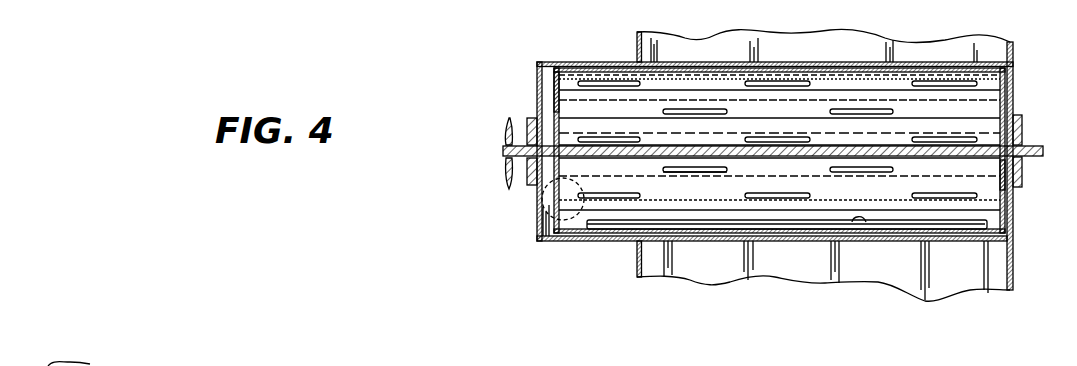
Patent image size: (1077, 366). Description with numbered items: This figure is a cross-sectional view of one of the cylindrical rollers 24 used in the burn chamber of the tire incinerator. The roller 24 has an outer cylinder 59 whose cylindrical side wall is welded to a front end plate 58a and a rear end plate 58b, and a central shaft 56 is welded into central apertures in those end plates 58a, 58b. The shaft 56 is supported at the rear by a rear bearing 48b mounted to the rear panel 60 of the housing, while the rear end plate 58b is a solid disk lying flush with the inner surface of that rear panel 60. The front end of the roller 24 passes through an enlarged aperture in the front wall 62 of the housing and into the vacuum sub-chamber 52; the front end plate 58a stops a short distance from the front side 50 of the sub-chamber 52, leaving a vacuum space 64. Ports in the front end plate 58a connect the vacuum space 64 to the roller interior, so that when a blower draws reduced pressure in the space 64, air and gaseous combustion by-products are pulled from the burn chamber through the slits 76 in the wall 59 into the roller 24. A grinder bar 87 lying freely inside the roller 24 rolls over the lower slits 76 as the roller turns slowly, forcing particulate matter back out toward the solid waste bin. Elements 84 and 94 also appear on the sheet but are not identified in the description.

The roller 24 is at (675, 63).
The rear bearing 48b is at (1022, 168).
The front side 50 is at (534, 233).
The vacuum sub-chamber 52 is at (583, 247).
The central shaft 56 is at (1026, 146).
The front end plate 58a is at (548, 132).
The rear end plate 58b is at (1005, 169).
The roller outer cylinder 59 is at (806, 62).
The rear panel 60 is at (1013, 262).
The front wall 62 is at (637, 42).
The vacuum space 64 is at (535, 118).
The slits 76 is at (718, 172).
The element 84 is at (884, 363).
The grinder bar 87 is at (858, 218).
The element 94 is at (103, 356).